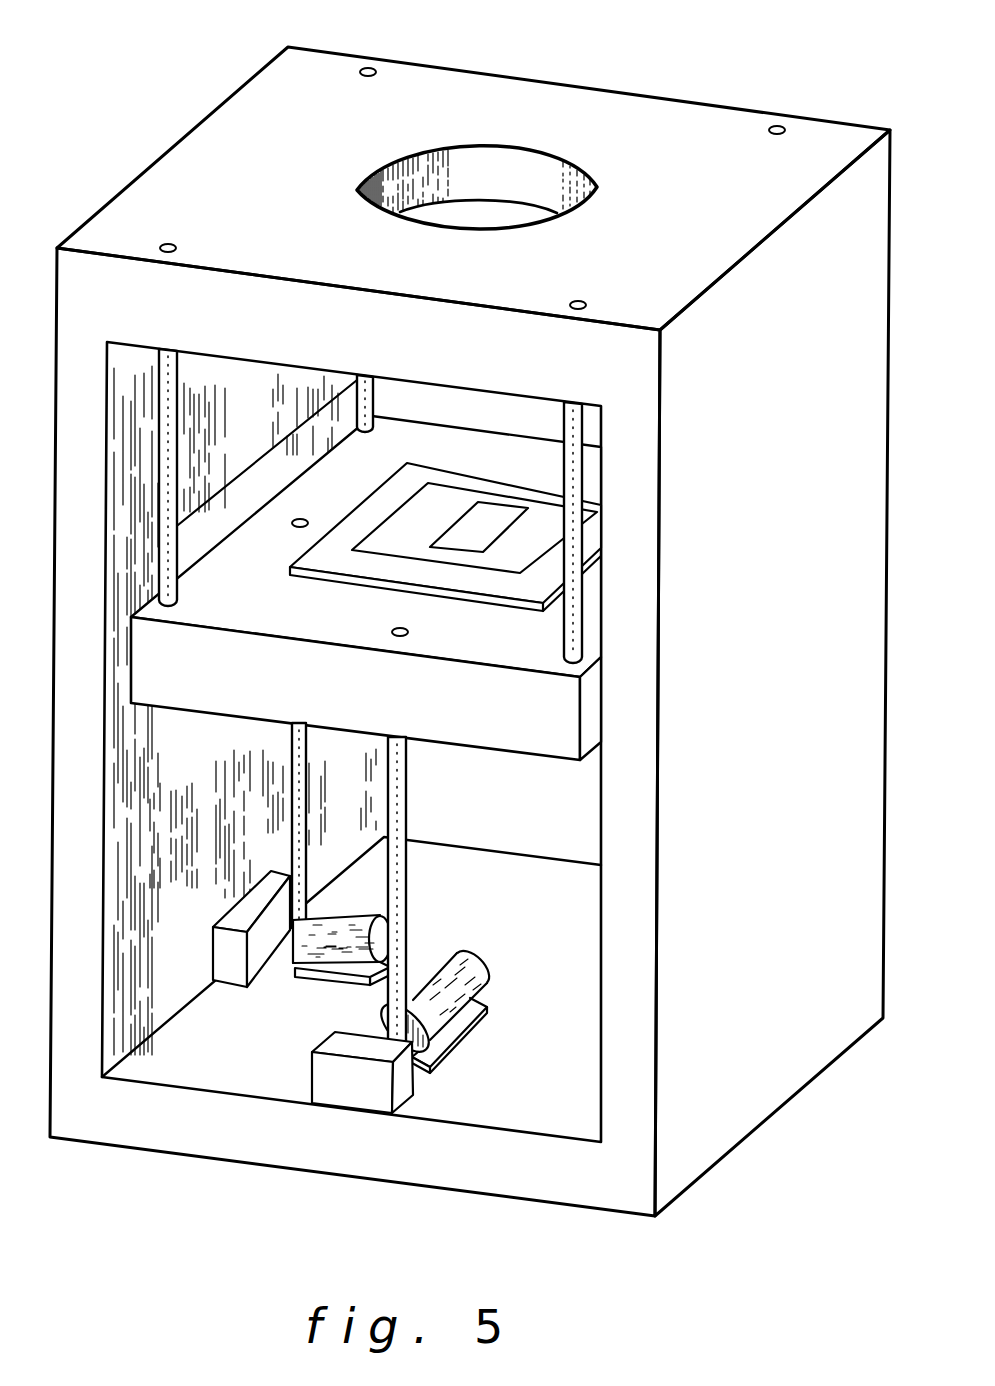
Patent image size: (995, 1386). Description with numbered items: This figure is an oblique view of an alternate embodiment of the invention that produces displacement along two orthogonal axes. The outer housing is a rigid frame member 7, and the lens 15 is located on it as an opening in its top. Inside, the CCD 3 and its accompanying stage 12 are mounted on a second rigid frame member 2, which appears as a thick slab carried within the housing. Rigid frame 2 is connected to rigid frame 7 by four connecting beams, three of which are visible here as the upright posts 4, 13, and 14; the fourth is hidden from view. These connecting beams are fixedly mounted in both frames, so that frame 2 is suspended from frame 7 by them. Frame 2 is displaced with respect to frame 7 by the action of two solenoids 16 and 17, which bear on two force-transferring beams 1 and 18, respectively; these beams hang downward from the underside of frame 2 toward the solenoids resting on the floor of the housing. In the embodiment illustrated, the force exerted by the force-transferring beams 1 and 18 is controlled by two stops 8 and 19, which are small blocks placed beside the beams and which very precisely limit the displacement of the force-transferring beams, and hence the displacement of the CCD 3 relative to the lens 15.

The force-transferring beam 1 is at (407, 912).
The rigid frame member 2 is at (495, 735).
The CCD 3 is at (490, 518).
The connecting beam 4 is at (563, 627).
The rigid frame member 7 is at (257, 183).
The stop 8 is at (312, 1057).
The stage 12 is at (357, 578).
The connecting beam 13 is at (178, 525).
The connecting beam 14 is at (357, 402).
The lens 15 is at (484, 183).
The solenoid 16 is at (478, 975).
The solenoid 17 is at (341, 918).
The force-transferring beam 18 is at (291, 763).
The stop 19 is at (228, 942).